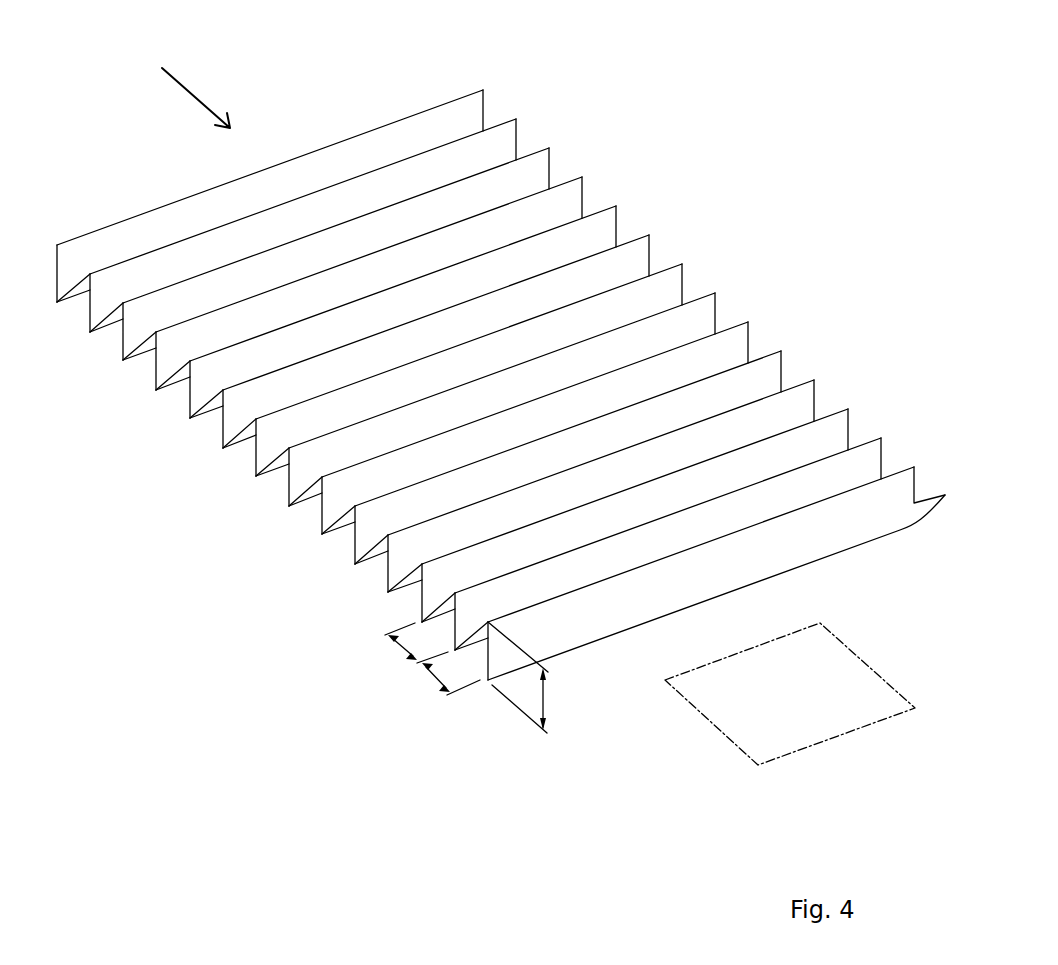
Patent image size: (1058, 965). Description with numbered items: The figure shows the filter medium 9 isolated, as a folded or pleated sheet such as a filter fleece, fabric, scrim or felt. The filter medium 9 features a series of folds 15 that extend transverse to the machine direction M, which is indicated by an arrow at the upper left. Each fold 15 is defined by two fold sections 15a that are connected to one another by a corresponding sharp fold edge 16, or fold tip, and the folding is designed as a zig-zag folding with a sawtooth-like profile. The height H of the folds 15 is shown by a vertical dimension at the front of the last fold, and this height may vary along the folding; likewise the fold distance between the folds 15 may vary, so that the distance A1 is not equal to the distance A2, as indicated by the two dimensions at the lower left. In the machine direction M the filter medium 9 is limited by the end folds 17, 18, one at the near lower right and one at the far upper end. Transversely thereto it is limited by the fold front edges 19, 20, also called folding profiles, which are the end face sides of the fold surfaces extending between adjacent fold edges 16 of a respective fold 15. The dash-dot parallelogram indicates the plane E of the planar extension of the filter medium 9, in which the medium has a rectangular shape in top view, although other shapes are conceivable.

The filter medium 9 is at (712, 93).
The folds 15 is at (664, 236).
The fold sections 15a is at (210, 397).
The fold edges 16 is at (240, 383).
The end fold 17 is at (845, 540).
The end fold 18 is at (479, 103).
The fold front edge 19 is at (123, 343).
The fold front edge 20 is at (552, 163).
The machine direction M is at (193, 97).
The height H is at (550, 705).
The distance A1 is at (397, 647).
The distance A2 is at (437, 677).
The plane E is at (740, 747).